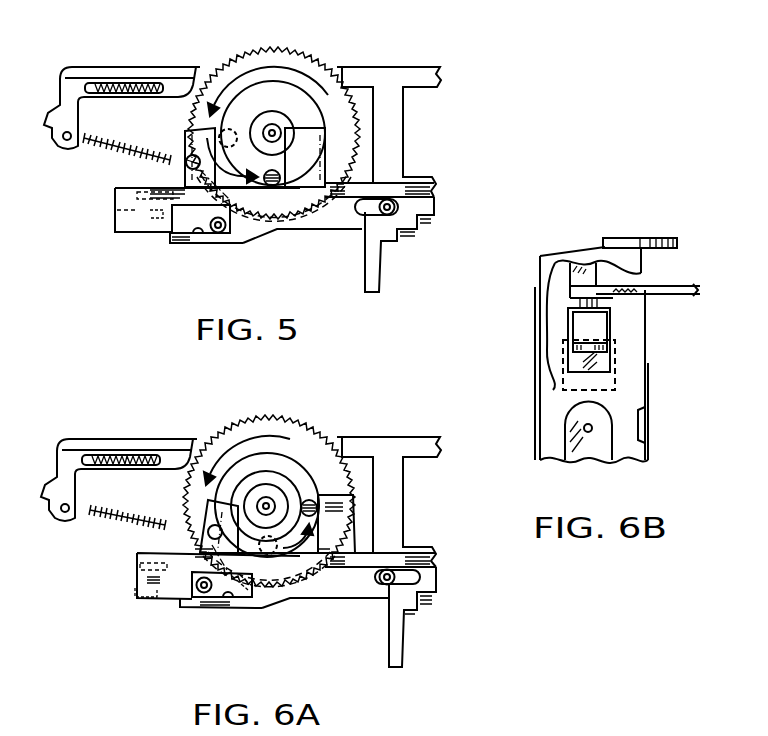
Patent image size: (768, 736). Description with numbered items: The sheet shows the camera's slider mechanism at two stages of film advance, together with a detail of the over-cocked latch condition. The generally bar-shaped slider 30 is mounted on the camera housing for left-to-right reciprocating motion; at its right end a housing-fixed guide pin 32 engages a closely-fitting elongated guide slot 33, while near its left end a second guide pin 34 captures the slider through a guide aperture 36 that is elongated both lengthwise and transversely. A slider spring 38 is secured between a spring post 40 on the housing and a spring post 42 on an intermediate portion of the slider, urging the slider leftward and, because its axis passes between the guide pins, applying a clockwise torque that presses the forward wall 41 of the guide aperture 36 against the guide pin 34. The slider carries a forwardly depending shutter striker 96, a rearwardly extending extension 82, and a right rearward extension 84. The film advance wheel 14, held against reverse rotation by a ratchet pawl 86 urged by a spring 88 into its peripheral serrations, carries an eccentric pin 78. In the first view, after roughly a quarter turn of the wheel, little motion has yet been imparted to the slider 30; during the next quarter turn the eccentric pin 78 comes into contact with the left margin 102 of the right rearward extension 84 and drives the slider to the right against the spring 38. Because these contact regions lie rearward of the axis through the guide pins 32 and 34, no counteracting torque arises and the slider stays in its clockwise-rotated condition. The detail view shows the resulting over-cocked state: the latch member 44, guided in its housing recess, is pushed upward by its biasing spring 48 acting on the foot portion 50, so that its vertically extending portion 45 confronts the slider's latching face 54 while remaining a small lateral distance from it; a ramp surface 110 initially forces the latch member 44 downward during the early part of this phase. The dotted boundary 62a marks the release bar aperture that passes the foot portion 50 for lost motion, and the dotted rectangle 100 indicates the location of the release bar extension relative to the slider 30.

In FIG. 5, the film advance wheel 14 is at (265, 68).
In FIG. 6A, the film advance wheel 14 is at (268, 436).
In FIG. 5, the slider 30 is at (290, 212).
In FIG. 6A, the slider 30 is at (352, 598).
In FIG. 5, the guide pin 32 is at (398, 208).
In FIG. 6A, the guide pin 32 is at (412, 580).
In FIG. 5, the guide slot 33 is at (365, 213).
In FIG. 6A, the guide slot 33 is at (385, 586).
In FIG. 5, the guide pin 34 is at (253, 240).
In FIG. 6A, the guide pin 34 is at (213, 599).
In FIG. 5, the guide aperture 36 is at (173, 242).
In FIG. 6A, the guide aperture 36 is at (262, 608).
In FIG. 5, the slider spring 38 is at (98, 152).
In FIG. 6A, the slider spring 38 is at (108, 513).
In FIG. 5, the spring post 40 is at (57, 150).
In FIG. 6A, the spring post 40 is at (58, 512).
In FIG. 5, the forward wall 41 is at (193, 240).
In FIG. 6A, the forward wall 41 is at (222, 600).
In FIG. 5, the spring post 42 is at (190, 160).
In FIG. 6A, the spring post 42 is at (210, 530).
In FIG. 6B, the latch member 44 is at (585, 328).
In FIG. 5, the vertically extending portion 45 is at (150, 228).
In FIG. 6A, the vertically extending portion 45 is at (142, 600).
In FIG. 6B, the vertically extending portion 45 is at (590, 314).
In FIG. 6B, the biasing spring 48 is at (598, 362).
In FIG. 6B, the foot portion 50 is at (580, 348).
In FIG. 5, the latching face 54 is at (137, 222).
In FIG. 6A, the latching face 54 is at (137, 582).
In FIG. 6B, the dotted boundary 62a is at (565, 388).
In FIG. 5, the eccentric pin 78 is at (283, 172).
In FIG. 6A, the eccentric pin 78 is at (340, 512).
In FIG. 5, the rearwardly extending extension 82 is at (236, 104).
In FIG. 6A, the rearwardly extending extension 82 is at (236, 474).
In FIG. 5, the right rearward extension 84 is at (312, 140).
In FIG. 6A, the right rearward extension 84 is at (342, 526).
In FIG. 5, the ratchet pawl 86 is at (178, 84).
In FIG. 6A, the ratchet pawl 86 is at (178, 459).
In FIG. 5, the spring 88 is at (107, 84).
In FIG. 6A, the spring 88 is at (107, 458).
In FIG. 5, the shutter striker 96 is at (386, 267).
In FIG. 6A, the shutter striker 96 is at (403, 636).
In FIG. 5, the dotted rectangle 100 is at (158, 190).
In FIG. 6A, the dotted rectangle 100 is at (138, 567).
In FIG. 6A, the left margin 102 is at (312, 498).
In FIG. 6B, the ramp surface 110 is at (630, 293).